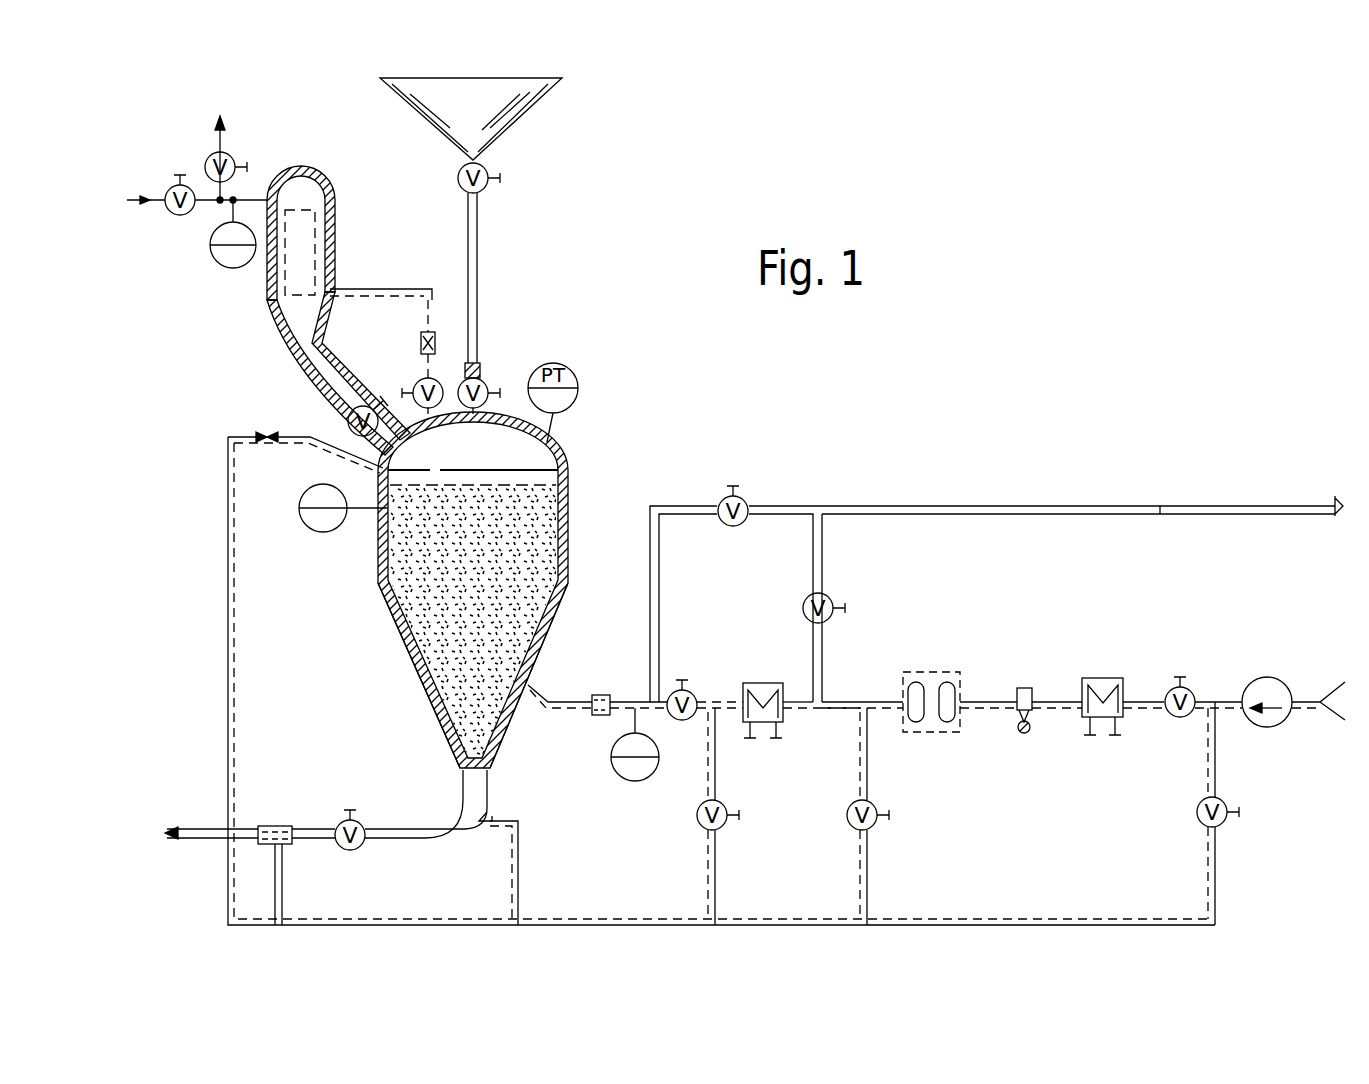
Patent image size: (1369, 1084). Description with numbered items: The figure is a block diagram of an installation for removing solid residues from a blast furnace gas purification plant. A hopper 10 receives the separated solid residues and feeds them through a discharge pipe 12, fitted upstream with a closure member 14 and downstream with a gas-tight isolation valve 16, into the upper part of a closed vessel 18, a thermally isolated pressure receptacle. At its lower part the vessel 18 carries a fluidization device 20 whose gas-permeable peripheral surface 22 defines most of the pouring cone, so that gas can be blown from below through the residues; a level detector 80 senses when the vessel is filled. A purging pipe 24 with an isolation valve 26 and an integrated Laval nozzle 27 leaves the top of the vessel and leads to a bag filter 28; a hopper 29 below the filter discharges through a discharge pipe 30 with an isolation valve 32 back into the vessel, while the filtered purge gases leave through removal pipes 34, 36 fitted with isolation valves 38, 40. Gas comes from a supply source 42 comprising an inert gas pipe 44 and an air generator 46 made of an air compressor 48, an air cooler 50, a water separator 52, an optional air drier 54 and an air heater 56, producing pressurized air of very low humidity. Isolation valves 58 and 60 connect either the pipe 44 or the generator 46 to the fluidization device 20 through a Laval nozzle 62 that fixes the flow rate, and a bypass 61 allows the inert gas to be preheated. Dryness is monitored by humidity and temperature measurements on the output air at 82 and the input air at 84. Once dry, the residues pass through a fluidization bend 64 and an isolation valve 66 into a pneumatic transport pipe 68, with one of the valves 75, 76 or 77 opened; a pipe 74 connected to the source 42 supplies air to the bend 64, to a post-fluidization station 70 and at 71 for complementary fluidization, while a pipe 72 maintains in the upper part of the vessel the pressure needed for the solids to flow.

The hopper 10 is at (510, 110).
The discharge pipe 12 is at (478, 272).
The closure member 14 is at (488, 170).
The isolation valve 16 is at (484, 385).
The closed vessel 18 is at (582, 470).
The fluidization device 20 is at (543, 648).
The peripheral surface 22 is at (508, 612).
The purging pipe 24 is at (398, 412).
The isolation valve 26 is at (418, 382).
The Laval nozzle 27 is at (418, 340).
The bag filter 28 is at (342, 243).
The hopper 29 is at (292, 312).
The discharge pipe 30 is at (300, 380).
The isolation valve 32 is at (348, 428).
The removal pipe 34 is at (143, 204).
The removal pipe 36 is at (225, 124).
The isolation valve 38 is at (192, 215).
The isolation valve 40 is at (232, 160).
The gas supply source 42 is at (1056, 477).
The pipe 44 is at (1159, 516).
The air generator 46 is at (1028, 790).
The air compressor 48 is at (1278, 678).
The air cooler 50 is at (1106, 678).
The water separator 52 is at (1025, 688).
The air drier 54 is at (931, 672).
The air heater 56 is at (761, 683).
The isolation valve 58 is at (699, 690).
The isolation valve 60 is at (746, 497).
The bypass 61 is at (837, 600).
The Laval nozzle 62 is at (601, 718).
The fluidization bend 64 is at (460, 795).
The isolation valve 66 is at (366, 848).
The pneumatic transport pipe 68 is at (276, 810).
The post-fluidization station 70 is at (288, 850).
The air introduction point 71 is at (494, 815).
The pipe 72 is at (306, 445).
The pipe 74 is at (595, 924).
The valve 75 is at (729, 830).
The valve 76 is at (881, 830).
The valve 77 is at (1231, 828).
The level detector 80 is at (323, 533).
The output measurement point 82 is at (225, 262).
The input measurement point 84 is at (638, 783).